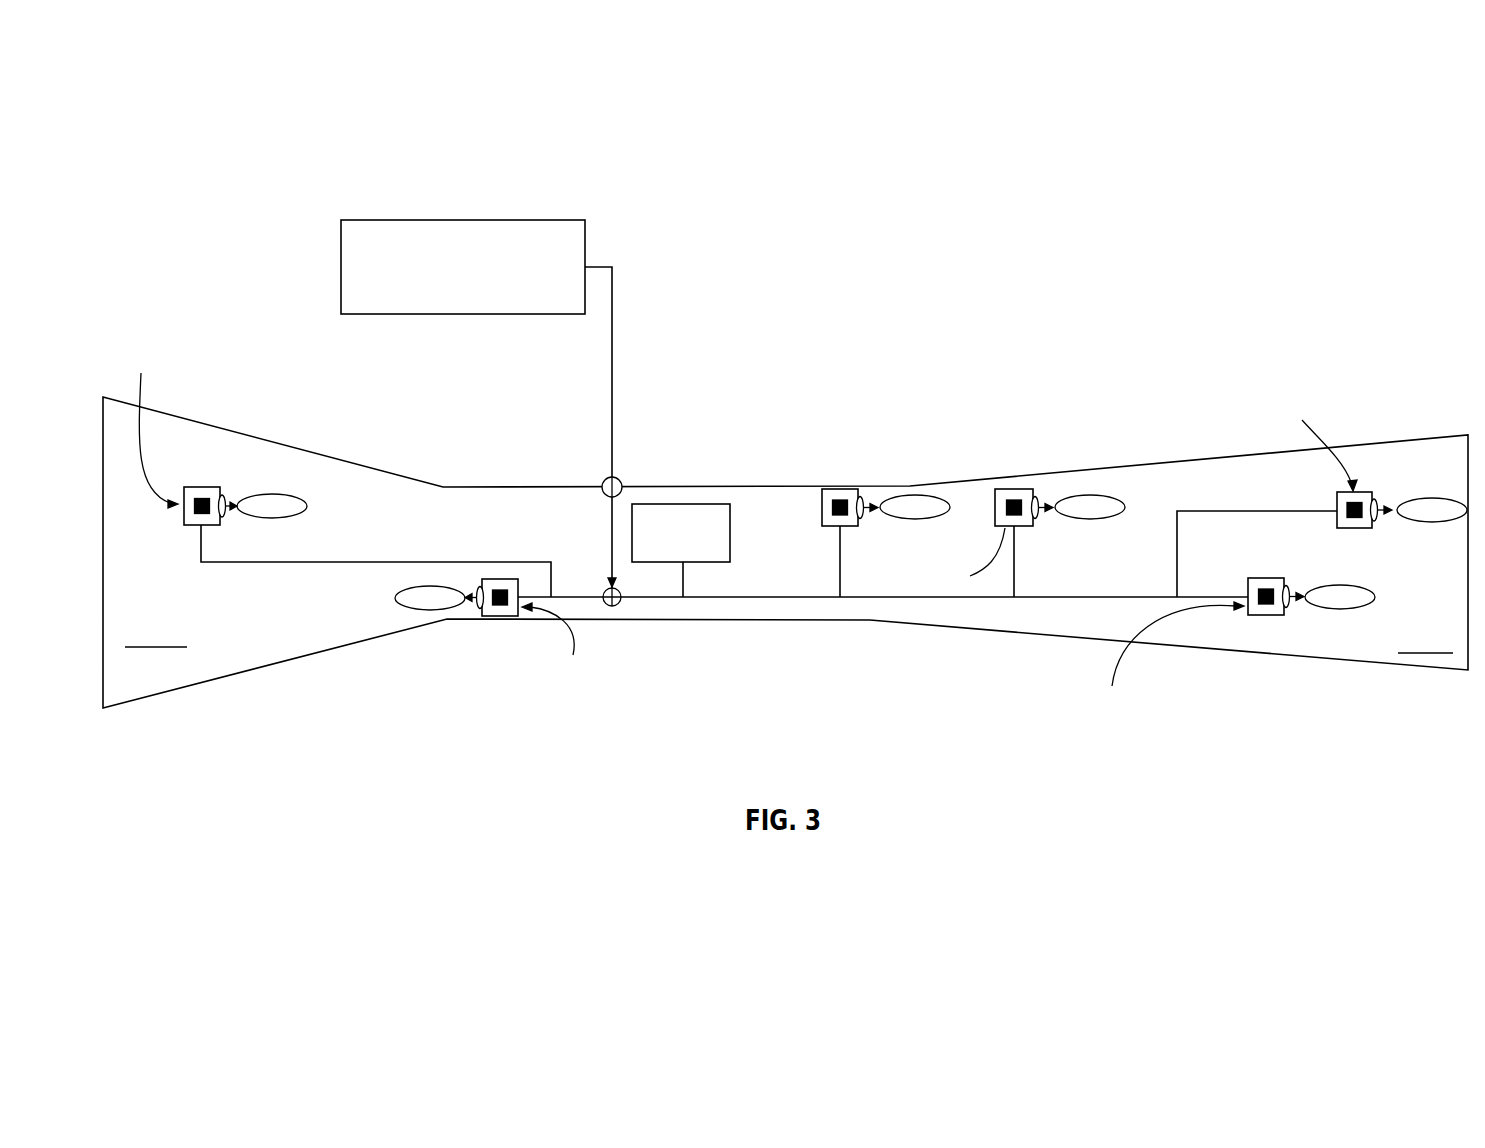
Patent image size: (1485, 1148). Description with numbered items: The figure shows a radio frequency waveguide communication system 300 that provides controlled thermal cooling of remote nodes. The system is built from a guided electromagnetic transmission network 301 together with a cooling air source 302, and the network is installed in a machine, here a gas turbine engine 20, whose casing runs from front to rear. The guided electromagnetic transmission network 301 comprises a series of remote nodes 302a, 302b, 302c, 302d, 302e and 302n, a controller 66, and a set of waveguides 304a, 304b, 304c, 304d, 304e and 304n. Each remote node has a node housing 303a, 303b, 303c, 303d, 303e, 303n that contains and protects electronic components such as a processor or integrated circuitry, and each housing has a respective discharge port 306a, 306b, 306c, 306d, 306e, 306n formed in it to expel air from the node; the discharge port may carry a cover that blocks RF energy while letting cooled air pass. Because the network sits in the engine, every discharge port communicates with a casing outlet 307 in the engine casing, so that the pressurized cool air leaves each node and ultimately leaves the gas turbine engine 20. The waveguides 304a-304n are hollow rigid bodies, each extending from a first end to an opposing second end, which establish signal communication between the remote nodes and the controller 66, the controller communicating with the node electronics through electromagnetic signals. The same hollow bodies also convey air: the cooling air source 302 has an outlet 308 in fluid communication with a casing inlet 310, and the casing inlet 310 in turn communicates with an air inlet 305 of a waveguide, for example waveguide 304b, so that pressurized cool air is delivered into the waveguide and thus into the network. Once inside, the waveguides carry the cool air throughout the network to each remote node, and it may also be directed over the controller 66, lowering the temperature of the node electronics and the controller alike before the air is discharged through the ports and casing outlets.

The gas turbine engine 20 is at (968, 637).
The controller 66 is at (693, 504).
The RF waveguide communication system 300 is at (793, 322).
The guided electromagnetic transmission network 301 is at (352, 600).
The cooling air source 302 is at (345, 208).
The remote node 302a is at (202, 497).
The remote node 302b is at (500, 617).
The remote node 302c is at (835, 489).
The remote node 302d is at (1012, 488).
The remote node 302e is at (1267, 616).
The remote node 302n is at (1355, 529).
The node housing 303a is at (192, 528).
The node housing 303b is at (498, 579).
The node housing 303c is at (822, 526).
The node housing 303d is at (1033, 527).
The node housing 303e is at (1278, 616).
The node housing 303n is at (1336, 500).
The waveguide 304a is at (352, 561).
The waveguide 304b is at (915, 598).
The waveguide 304c is at (1235, 510).
The waveguide 304d is at (695, 598).
The waveguide 304e is at (830, 598).
The waveguide 304n is at (1015, 590).
The air inlet 305 is at (613, 606).
The discharge port 306a is at (223, 518).
The discharge port 306b is at (480, 587).
The discharge port 306c is at (860, 494).
The discharge port 306d is at (1036, 498).
The discharge port 306e is at (1287, 616).
The discharge port 306n is at (1376, 521).
The casing outlet 307 is at (1445, 498).
The outlet 308 is at (593, 266).
The casing inlet 310 is at (616, 478).